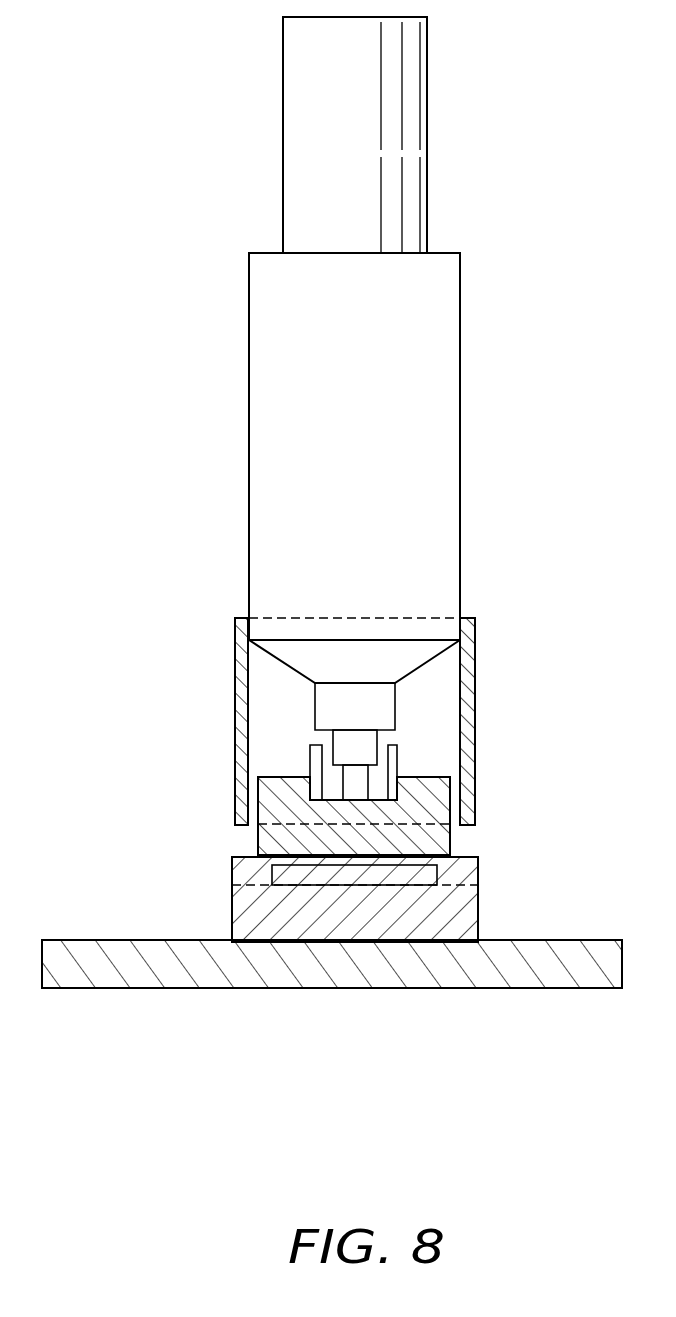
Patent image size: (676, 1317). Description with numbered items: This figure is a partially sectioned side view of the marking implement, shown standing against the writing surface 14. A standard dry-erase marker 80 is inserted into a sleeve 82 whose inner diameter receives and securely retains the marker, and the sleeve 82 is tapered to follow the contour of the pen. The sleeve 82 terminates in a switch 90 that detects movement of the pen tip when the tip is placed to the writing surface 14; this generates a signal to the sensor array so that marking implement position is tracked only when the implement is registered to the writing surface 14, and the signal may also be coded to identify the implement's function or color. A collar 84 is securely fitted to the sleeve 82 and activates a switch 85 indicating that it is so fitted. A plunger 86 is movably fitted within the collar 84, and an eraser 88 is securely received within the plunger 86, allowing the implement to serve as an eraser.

The dry-erase marker 80 is at (307, 173).
The sleeve 82 is at (275, 475).
The collar 84 is at (240, 720).
The switch 85 is at (250, 638).
The plunger 86 is at (287, 839).
The eraser 88 is at (255, 926).
The switch 90 is at (367, 741).
The writing surface 14 is at (185, 977).